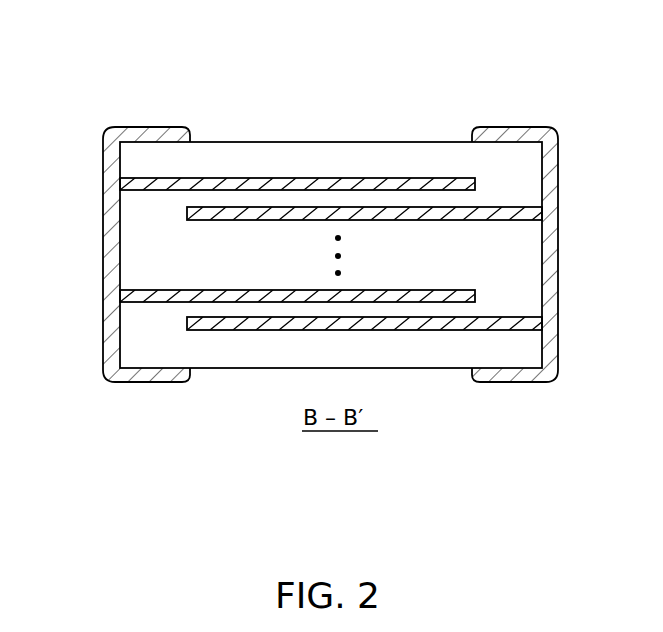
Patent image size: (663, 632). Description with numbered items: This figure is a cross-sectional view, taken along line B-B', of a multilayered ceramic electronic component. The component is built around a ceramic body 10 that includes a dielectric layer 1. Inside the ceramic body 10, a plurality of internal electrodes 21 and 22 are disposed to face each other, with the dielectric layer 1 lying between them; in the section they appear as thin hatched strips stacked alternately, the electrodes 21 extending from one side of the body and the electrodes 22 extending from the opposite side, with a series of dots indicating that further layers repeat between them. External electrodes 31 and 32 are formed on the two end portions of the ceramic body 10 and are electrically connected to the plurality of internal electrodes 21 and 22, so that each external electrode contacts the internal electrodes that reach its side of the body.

The dielectric layer 1 is at (333, 206).
The ceramic body 10 is at (285, 142).
The internal electrode 21 is at (123, 180).
The internal electrode 22 is at (517, 325).
The external electrode 31 is at (148, 128).
The external electrode 32 is at (517, 128).